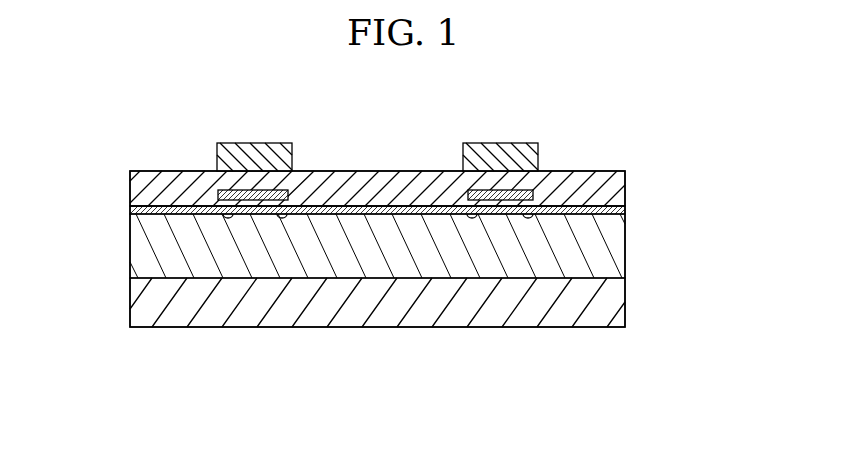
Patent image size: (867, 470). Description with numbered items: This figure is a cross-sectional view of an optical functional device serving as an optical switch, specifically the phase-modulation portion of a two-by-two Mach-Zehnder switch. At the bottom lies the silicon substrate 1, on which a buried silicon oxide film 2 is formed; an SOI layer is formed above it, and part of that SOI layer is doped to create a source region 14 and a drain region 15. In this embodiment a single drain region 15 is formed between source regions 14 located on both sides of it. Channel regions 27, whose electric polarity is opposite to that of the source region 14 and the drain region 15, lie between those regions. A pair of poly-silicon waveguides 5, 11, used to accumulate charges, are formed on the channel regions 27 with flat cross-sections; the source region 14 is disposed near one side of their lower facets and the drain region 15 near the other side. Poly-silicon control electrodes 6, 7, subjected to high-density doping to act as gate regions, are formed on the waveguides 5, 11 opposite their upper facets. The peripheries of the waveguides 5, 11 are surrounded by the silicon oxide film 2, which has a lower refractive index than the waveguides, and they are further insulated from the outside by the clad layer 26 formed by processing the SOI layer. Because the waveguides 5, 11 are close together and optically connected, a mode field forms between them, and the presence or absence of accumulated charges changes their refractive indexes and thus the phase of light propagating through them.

The silicon substrate 1 is at (138, 296).
The silicon oxide film 2 is at (138, 242).
The waveguide 5 is at (222, 191).
The control electrode 6 is at (250, 143).
The control electrode 7 is at (497, 143).
The waveguide 11 is at (532, 189).
The source region 14 is at (152, 206).
The drain region 15 is at (352, 207).
The clad layer 26 is at (418, 178).
The channel region 27 is at (253, 215).